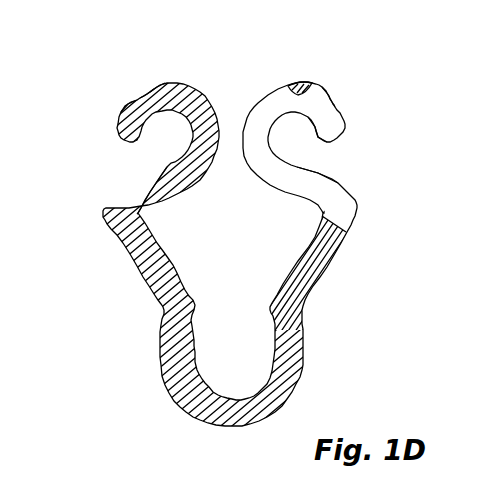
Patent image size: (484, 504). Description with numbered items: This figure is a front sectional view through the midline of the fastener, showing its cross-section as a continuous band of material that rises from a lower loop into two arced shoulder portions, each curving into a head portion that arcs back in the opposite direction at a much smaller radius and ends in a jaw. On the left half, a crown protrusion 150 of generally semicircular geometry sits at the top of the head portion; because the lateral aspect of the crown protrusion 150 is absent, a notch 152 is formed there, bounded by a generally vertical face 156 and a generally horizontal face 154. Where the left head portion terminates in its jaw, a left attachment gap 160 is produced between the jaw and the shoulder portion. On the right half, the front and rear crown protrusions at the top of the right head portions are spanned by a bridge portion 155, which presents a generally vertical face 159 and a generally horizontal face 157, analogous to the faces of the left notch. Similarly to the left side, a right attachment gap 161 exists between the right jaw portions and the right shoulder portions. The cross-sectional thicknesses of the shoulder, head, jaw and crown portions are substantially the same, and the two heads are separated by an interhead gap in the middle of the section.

The crown protrusion 150 is at (160, 83).
The notch 152 is at (147, 95).
The horizontal face 154 is at (137, 101).
The vertical face 156 is at (153, 89).
The bridge portion 155 is at (302, 83).
The horizontal face 157 is at (296, 90).
The vertical face 159 is at (313, 83).
The left attachment gap 160 is at (130, 159).
The right attachment gap 161 is at (327, 160).